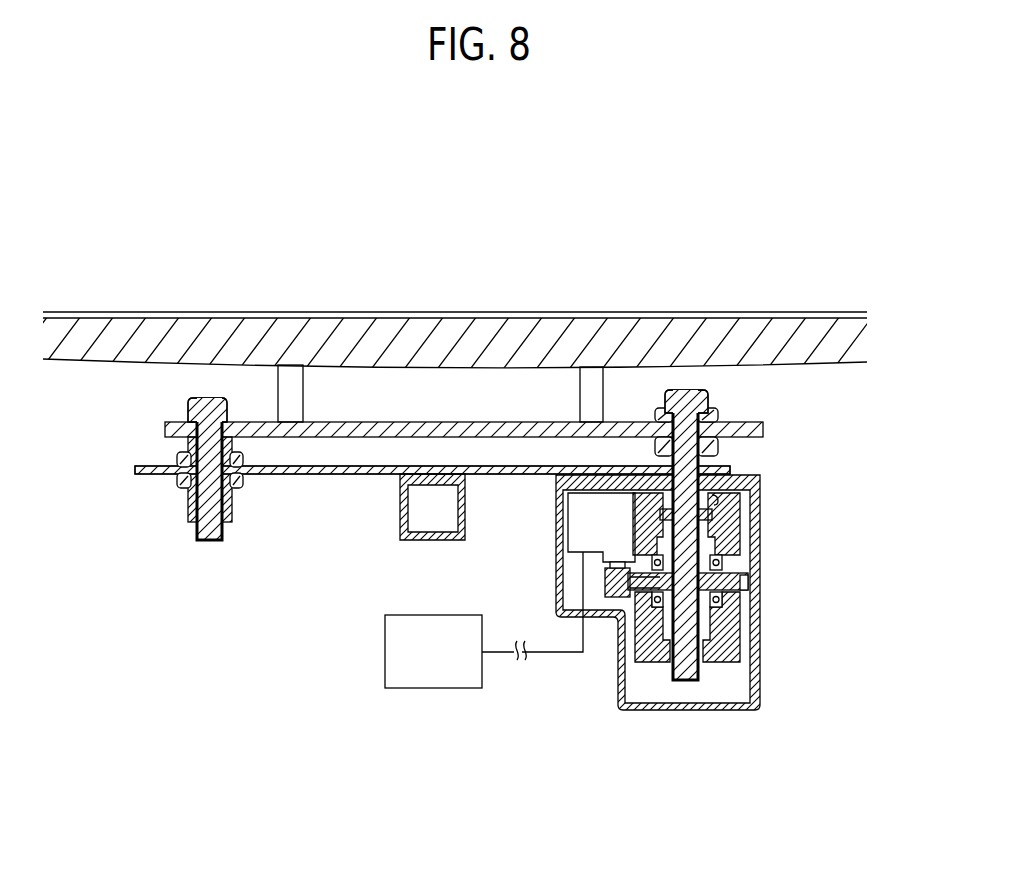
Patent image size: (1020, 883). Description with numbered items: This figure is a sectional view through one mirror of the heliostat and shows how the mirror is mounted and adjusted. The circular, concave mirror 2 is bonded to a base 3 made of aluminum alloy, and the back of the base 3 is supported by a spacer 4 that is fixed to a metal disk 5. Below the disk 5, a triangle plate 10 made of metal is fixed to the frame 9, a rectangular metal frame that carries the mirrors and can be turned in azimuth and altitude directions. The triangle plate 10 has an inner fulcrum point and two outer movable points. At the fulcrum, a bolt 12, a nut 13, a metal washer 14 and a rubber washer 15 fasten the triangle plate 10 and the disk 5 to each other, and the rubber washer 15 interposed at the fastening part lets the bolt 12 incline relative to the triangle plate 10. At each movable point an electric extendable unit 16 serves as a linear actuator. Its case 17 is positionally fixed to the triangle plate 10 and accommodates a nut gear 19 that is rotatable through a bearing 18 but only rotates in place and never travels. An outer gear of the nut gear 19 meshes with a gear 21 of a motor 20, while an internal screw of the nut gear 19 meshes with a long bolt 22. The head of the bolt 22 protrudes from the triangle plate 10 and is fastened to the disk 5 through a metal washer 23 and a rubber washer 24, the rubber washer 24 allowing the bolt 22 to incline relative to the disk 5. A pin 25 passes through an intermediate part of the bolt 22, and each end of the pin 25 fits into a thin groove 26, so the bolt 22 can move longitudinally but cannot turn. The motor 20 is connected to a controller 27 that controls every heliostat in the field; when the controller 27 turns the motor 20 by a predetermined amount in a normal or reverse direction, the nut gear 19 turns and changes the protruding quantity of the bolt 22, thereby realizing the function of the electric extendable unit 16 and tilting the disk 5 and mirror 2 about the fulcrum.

The mirror 2 is at (430, 312).
The base 3 is at (462, 368).
The spacer 4 is at (303, 387).
The disk 5 is at (522, 422).
The frame 9 is at (430, 542).
The triangle plate 10 is at (373, 477).
The bolt 12 is at (212, 398).
The nut 13 is at (238, 447).
The metal washer 14 is at (180, 484).
The rubber washer 15 is at (180, 457).
The electric extendable unit 16 is at (655, 661).
The case 17 is at (618, 676).
The bearing 18 is at (728, 561).
The nut gear 19 is at (749, 582).
The motor 20 is at (578, 510).
The gear 21 is at (607, 577).
The long bolt 22 is at (688, 390).
The metal washer 23 is at (723, 441).
The rubber washer 24 is at (718, 413).
The pin 25 is at (740, 522).
The thin groove 26 is at (742, 498).
The controller 27 is at (484, 620).